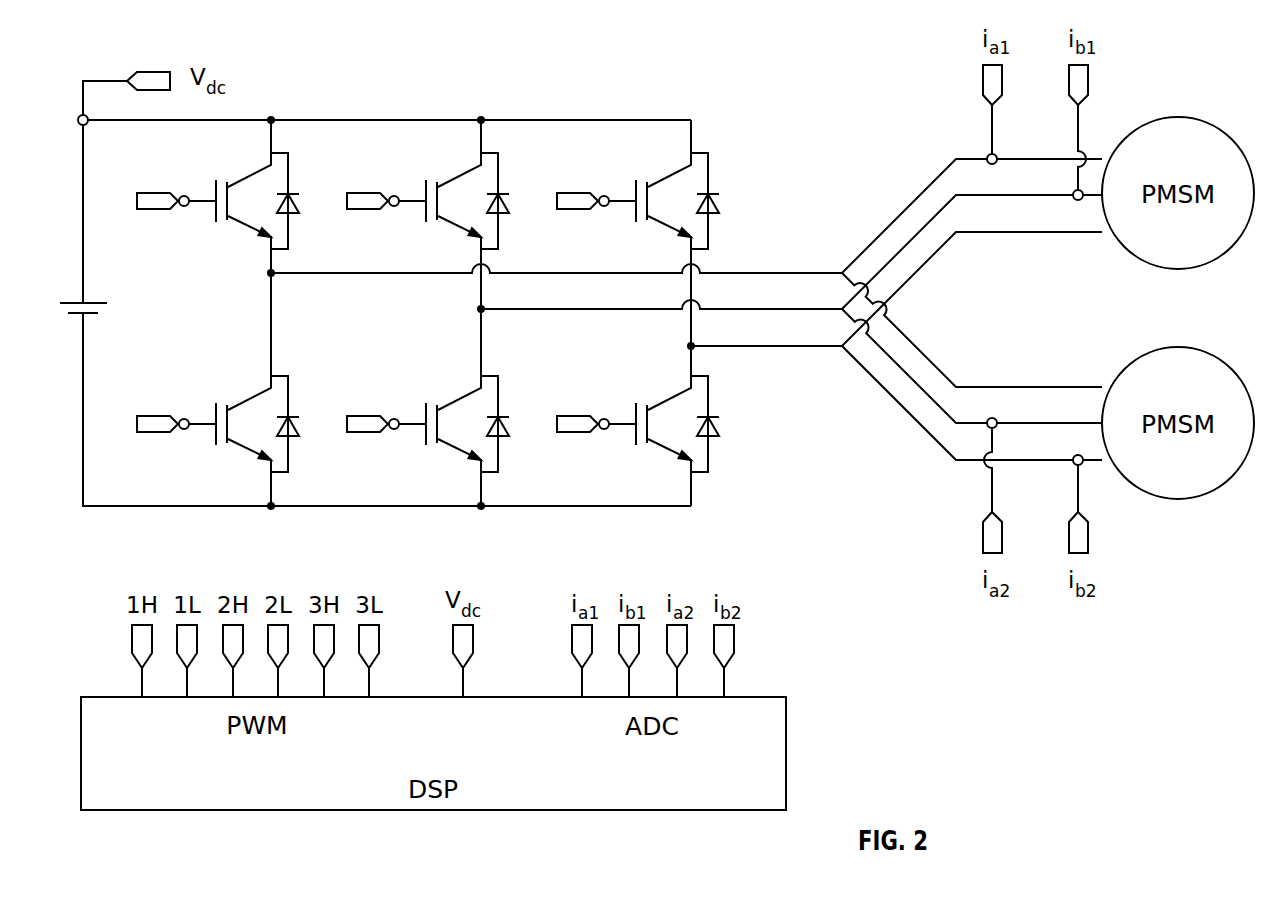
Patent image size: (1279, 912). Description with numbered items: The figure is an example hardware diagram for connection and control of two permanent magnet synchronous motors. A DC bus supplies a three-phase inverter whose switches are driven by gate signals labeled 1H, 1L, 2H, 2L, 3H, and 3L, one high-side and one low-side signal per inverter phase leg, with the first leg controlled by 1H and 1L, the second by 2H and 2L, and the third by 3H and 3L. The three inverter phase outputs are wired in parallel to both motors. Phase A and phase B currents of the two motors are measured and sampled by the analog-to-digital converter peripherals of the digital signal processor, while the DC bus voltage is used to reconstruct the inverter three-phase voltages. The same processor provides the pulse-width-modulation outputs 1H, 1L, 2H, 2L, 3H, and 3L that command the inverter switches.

The high-side IGBT switch of phase 1 1H is at (218, 201).
The low-side IGBT switch of phase 1 1L is at (218, 424).
The high-side IGBT switch of phase 2 2H is at (428, 201).
The low-side IGBT switch of phase 2 2L is at (428, 424).
The high-side IGBT switch of phase 3 3H is at (638, 201).
The low-side IGBT switch of phase 3 3L is at (638, 424).